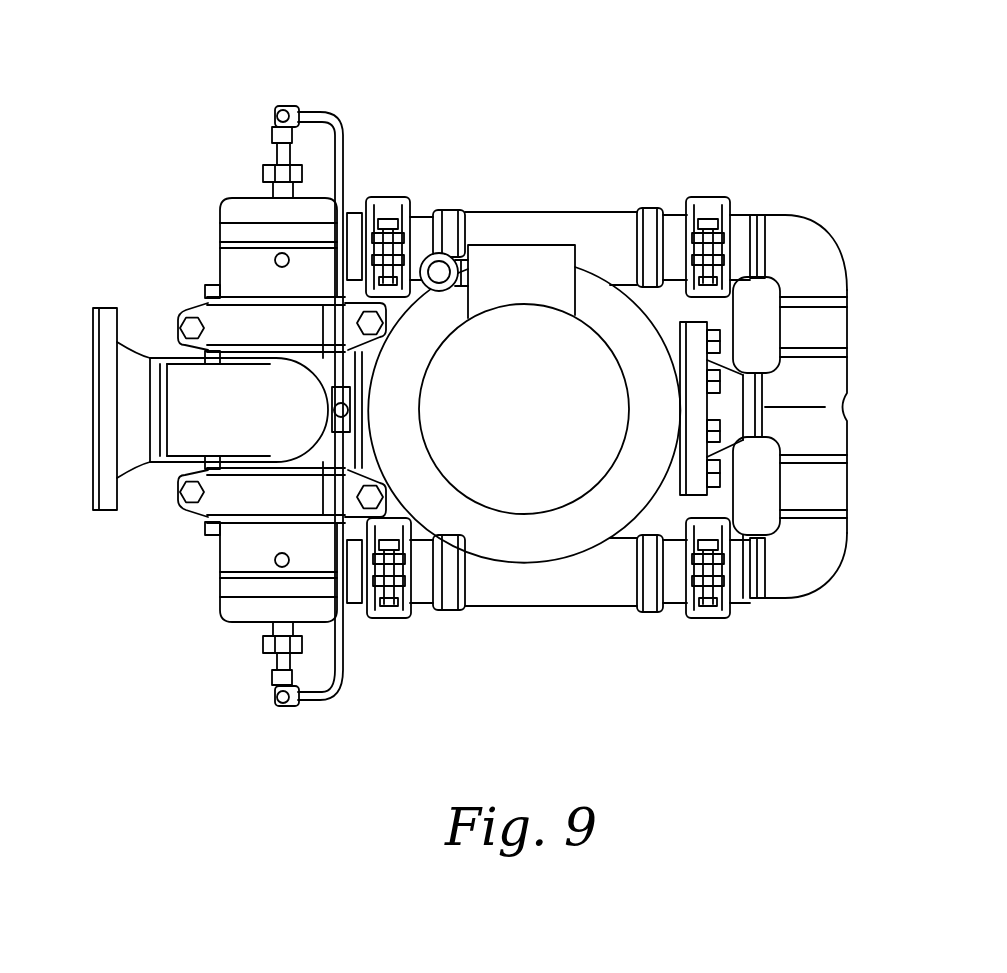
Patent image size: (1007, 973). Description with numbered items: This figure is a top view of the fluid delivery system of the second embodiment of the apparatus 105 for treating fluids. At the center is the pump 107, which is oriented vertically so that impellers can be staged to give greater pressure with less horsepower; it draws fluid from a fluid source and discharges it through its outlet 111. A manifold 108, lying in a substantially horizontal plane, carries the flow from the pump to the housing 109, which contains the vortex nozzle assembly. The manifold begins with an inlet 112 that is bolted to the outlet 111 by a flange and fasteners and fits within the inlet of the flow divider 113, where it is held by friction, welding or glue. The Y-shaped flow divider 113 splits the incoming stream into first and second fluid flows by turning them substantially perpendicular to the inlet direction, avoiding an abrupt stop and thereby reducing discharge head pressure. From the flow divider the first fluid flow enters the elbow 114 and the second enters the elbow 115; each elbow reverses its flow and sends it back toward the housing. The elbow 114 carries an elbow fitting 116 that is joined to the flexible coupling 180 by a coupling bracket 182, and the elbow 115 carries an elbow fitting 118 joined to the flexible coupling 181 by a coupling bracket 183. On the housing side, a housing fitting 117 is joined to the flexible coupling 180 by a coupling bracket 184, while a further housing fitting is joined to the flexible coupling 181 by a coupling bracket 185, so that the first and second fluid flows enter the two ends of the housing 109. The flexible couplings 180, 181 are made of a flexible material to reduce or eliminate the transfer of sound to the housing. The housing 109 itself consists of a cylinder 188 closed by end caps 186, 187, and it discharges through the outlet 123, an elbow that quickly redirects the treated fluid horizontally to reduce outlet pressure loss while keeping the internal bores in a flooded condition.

The apparatus for treating fluids 105 is at (547, 150).
The pump 107 is at (544, 422).
The manifold 108 is at (862, 542).
The housing 109 is at (208, 547).
The outlet 111 is at (736, 372).
The inlet 112 is at (745, 442).
The flow divider 113 is at (842, 431).
The elbow 114 is at (817, 238).
The elbow 115 is at (822, 575).
The elbow fitting 116 is at (742, 597).
The housing fitting 117 is at (352, 604).
The elbow fitting 118 is at (352, 213).
The outlet 123 is at (90, 377).
The flexible coupling 180 is at (545, 606).
The flexible coupling 181 is at (545, 212).
The coupling bracket 182 is at (706, 618).
The coupling bracket 183 is at (707, 196).
The coupling bracket 184 is at (385, 618).
The coupling bracket 185 is at (384, 198).
The end cap 186 is at (240, 197).
The end cap 187 is at (247, 618).
The cylinder 188 is at (217, 263).